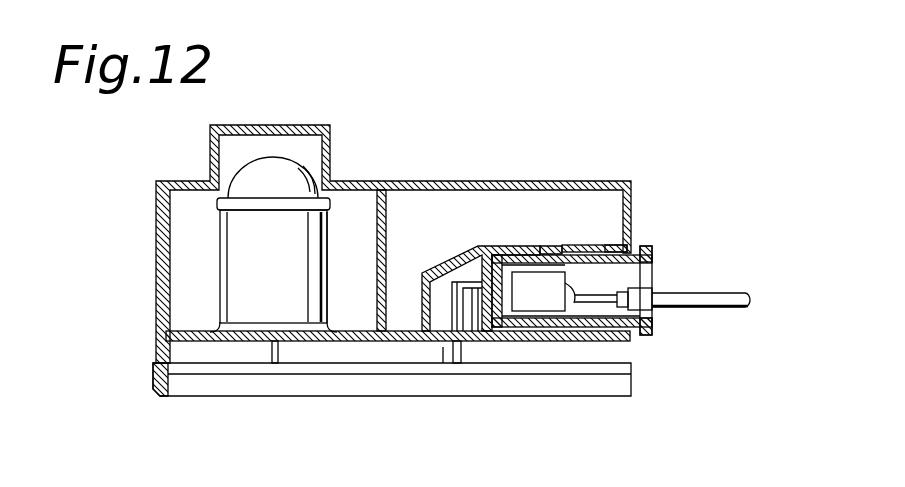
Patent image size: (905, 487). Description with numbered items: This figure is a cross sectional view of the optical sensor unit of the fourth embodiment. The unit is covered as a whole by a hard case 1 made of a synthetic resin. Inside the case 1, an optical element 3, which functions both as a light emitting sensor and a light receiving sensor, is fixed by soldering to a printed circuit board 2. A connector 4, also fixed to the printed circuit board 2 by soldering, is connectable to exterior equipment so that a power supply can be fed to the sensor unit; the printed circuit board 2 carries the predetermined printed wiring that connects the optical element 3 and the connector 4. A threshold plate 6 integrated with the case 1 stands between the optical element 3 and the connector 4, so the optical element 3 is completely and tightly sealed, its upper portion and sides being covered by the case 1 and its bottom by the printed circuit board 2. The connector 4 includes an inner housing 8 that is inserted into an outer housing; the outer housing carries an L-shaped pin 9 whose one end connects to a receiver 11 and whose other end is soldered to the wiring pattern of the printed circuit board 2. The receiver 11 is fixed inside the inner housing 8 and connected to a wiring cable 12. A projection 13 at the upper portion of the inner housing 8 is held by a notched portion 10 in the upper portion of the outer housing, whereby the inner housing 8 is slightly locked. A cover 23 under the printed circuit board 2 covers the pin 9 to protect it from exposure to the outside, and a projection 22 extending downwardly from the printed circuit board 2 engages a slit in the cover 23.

The case 1 is at (157, 270).
The printed circuit board 2 is at (588, 347).
The optical element 3 is at (232, 292).
The connector 4 is at (613, 247).
The threshold plate 6 is at (380, 227).
The inner housing 8 is at (652, 252).
The pin 9 is at (443, 347).
The notched portion 10 is at (562, 245).
The receiver 11 is at (478, 253).
The wiring cable 12 is at (727, 298).
The projection 13 is at (552, 245).
The projection 22 is at (158, 396).
The cover 23 is at (303, 375).